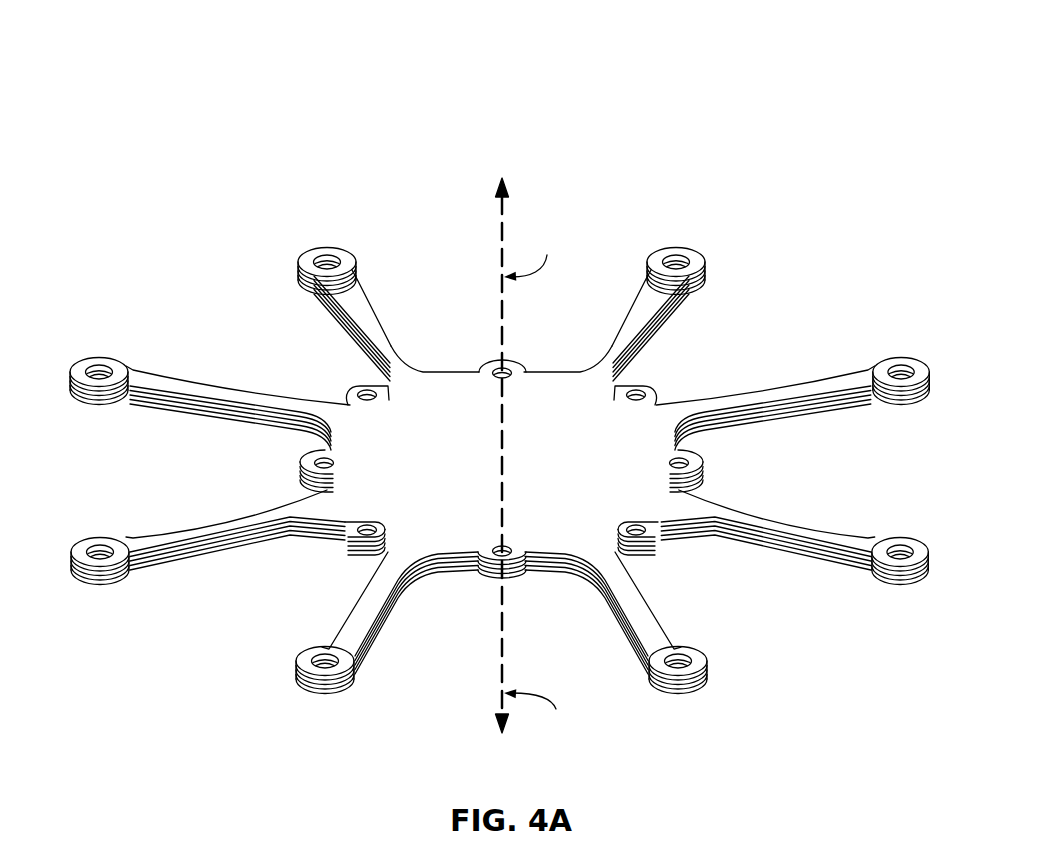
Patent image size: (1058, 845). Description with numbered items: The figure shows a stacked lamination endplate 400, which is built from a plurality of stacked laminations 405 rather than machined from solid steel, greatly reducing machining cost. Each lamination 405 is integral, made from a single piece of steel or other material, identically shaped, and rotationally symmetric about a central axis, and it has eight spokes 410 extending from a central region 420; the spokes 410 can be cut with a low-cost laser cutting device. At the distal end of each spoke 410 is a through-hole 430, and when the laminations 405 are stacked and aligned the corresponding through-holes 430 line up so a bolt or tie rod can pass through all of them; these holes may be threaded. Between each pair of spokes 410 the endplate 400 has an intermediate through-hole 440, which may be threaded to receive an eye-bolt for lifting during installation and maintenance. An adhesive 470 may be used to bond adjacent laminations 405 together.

The stacked lamination endplate 400 is at (353, 58).
The lamination 405 is at (668, 410).
The spoke 410 is at (128, 366).
The central region 420 is at (444, 429).
The through-hole 430 is at (305, 672).
The intermediate through-hole 440 is at (700, 472).
The adhesive 470 is at (834, 413).